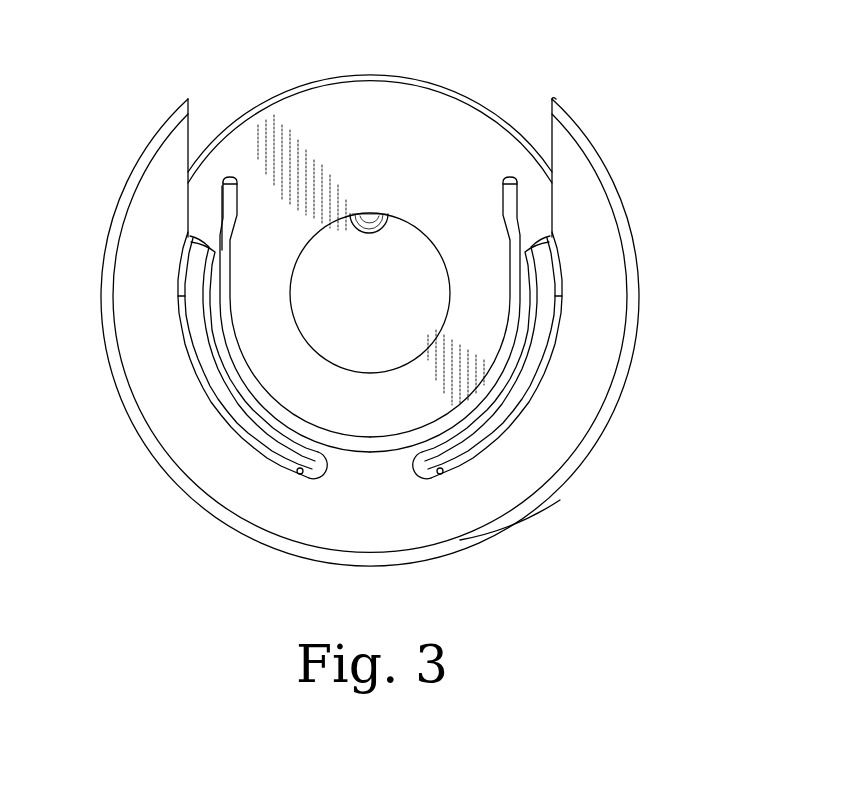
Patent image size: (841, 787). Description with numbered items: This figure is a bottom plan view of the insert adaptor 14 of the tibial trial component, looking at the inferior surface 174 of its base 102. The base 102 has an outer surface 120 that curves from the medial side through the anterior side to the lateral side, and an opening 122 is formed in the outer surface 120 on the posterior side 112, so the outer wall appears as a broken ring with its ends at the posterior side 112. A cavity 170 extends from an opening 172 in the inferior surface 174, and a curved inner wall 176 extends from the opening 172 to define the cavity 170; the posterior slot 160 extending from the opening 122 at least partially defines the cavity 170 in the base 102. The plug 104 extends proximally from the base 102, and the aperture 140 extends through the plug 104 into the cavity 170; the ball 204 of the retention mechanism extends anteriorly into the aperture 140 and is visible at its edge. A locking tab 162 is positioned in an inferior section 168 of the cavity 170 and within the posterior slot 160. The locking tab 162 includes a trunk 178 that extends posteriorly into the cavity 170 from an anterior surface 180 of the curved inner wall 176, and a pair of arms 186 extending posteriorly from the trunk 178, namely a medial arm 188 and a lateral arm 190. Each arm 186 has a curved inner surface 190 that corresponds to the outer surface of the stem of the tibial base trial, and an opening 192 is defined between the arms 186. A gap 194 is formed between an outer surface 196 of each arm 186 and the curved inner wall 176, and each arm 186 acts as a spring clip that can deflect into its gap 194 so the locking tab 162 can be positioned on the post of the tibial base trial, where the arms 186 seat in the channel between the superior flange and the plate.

The insert adaptor 14 is at (602, 98).
The base 102 is at (613, 290).
The plug 104 is at (357, 110).
The posterior side 112 is at (566, 62).
The outer surface 120 is at (603, 153).
The opening 122 is at (460, 72).
The aperture 140 is at (371, 320).
The posterior slot 160 is at (318, 135).
The locking tab 162 is at (505, 367).
The inferior section 168 is at (250, 288).
The cavity 170 is at (272, 358).
The opening 172 is at (315, 400).
The inferior surface 174 is at (492, 502).
The curved inner wall 176 is at (442, 474).
The trunk 178 is at (412, 472).
The anterior surface 180 is at (300, 474).
The arms 186 is at (217, 263).
The medial arm 188 is at (525, 350).
The lateral arm 190 is at (223, 337).
The opening 192 is at (396, 185).
The gap 194 is at (352, 205).
The outer surface 196 is at (213, 275).
The ball 204 is at (370, 231).